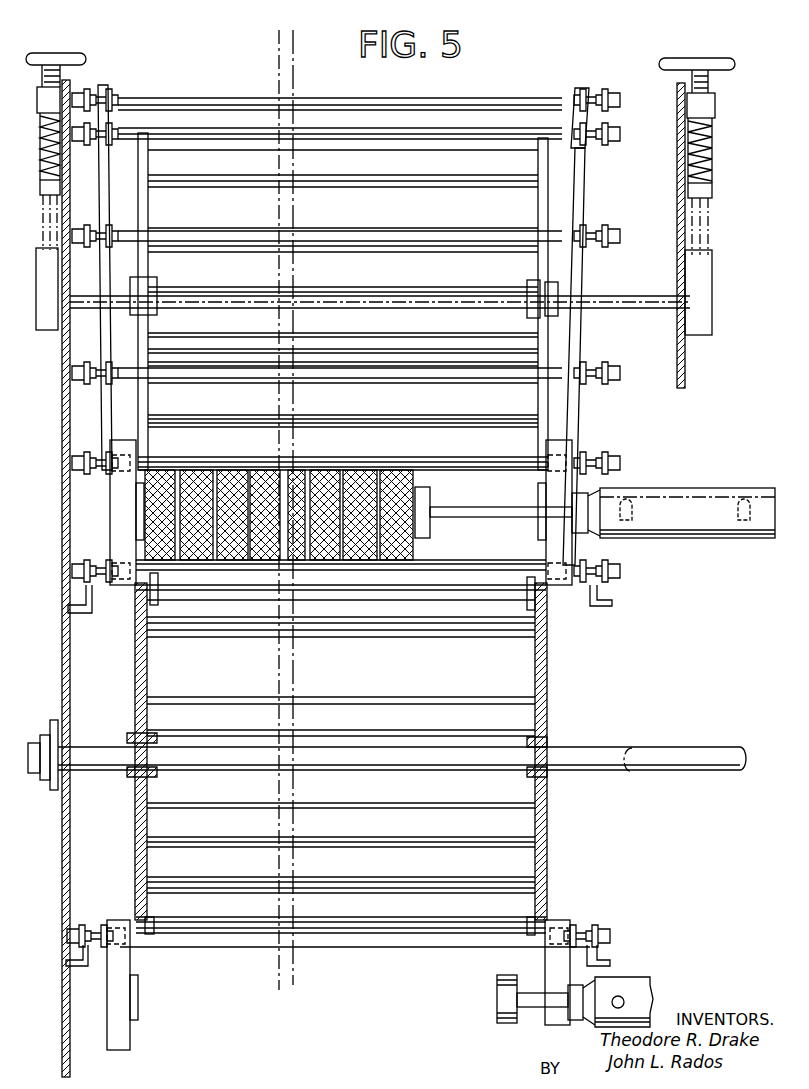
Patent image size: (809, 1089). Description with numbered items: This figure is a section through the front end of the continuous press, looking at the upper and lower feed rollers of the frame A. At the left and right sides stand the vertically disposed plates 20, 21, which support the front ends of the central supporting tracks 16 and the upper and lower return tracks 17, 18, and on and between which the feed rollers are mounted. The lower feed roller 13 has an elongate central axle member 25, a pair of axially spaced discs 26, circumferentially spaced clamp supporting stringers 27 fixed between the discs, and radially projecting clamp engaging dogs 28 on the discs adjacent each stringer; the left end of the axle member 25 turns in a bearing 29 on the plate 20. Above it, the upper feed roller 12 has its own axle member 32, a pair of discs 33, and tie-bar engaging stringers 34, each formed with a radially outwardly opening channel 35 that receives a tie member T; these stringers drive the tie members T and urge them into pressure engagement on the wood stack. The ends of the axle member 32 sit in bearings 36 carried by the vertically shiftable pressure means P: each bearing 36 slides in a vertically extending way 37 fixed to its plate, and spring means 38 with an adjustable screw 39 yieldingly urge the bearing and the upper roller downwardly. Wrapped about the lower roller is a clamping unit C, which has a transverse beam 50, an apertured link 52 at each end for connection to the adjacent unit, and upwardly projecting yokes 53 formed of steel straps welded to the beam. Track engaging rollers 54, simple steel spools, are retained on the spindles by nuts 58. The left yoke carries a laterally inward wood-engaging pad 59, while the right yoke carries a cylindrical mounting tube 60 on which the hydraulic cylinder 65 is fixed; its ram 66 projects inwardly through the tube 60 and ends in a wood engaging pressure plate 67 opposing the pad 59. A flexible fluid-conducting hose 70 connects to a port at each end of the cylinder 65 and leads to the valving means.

The upper feed roller 12 is at (545, 187).
The lower feed roller 13 is at (547, 666).
The central supporting tracks 16 is at (612, 603).
The upper return tracks 17 is at (597, 127).
The lower return tracks 18 is at (610, 961).
The left plate 20 is at (62, 518).
The right plate 21 is at (688, 368).
The axle member 25 is at (610, 748).
The discs 26 is at (135, 665).
The clamp supporting stringers 27 is at (203, 628).
The clamp engaging dogs 28 is at (158, 590).
The bearing 29 is at (52, 722).
The axle member 32 is at (640, 293).
The discs 33 is at (540, 262).
The tie-bar engaging stringers 34 is at (497, 188).
The channel 35 is at (42, 222).
The bearing 36 is at (36, 322).
The way 37 is at (700, 236).
The spring means 38 is at (712, 166).
The adjustable screw 39 is at (56, 66).
The beam 50 is at (395, 576).
The apertured link 52 is at (104, 585).
The yokes 53 is at (110, 491).
The track engaging roller 54 is at (78, 567).
The nuts 58 is at (614, 931).
The wood-engaging pads 59 is at (116, 521).
The mounting tubes 60 is at (590, 506).
The cylinder 65 is at (706, 540).
The ram 66 is at (448, 518).
The pressure plate 67 is at (430, 501).
The flexible fluid-conducting hose 70 is at (652, 538).
The tie members T is at (493, 100).
The pressure means P is at (737, 117).
The frame A is at (691, 385).
The clamping unit C is at (524, 537).